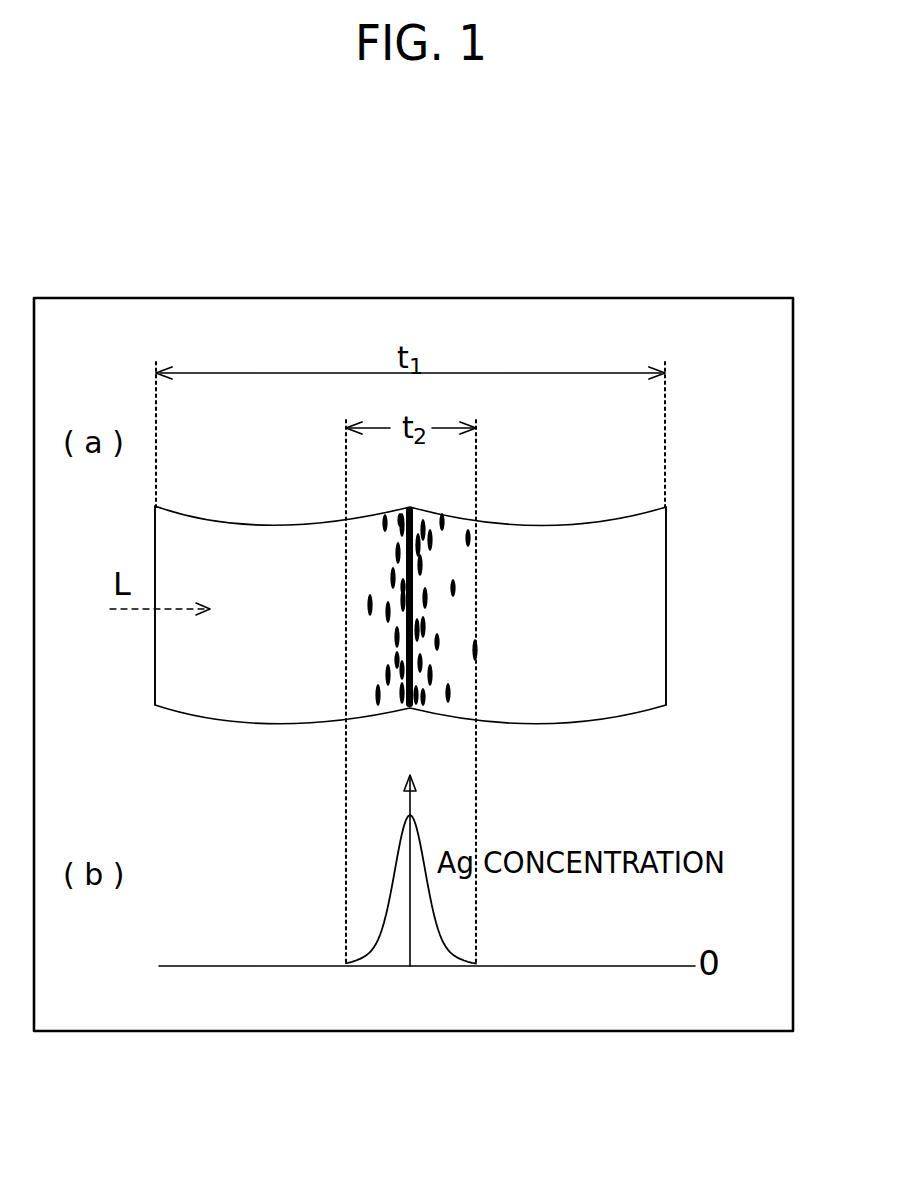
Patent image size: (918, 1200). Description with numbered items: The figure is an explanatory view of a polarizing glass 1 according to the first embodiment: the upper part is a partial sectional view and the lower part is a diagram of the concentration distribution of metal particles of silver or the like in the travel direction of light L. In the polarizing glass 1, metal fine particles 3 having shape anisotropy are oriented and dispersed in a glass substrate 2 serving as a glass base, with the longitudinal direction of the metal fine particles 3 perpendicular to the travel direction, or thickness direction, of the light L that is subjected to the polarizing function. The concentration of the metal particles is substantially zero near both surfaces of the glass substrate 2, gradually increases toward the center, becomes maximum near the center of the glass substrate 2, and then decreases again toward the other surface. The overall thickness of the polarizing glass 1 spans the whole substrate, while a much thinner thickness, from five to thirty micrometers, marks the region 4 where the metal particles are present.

The polarizing glass 1 is at (678, 733).
The glass substrate 2 is at (666, 606).
The metal fine particles 3 is at (455, 587).
The region where the metal particles are present 4 is at (465, 517).